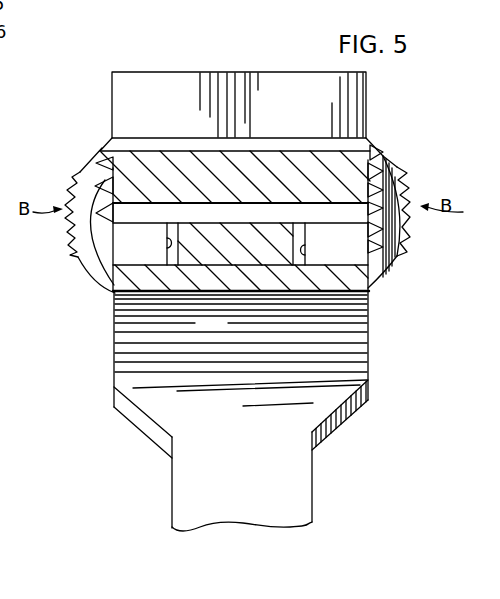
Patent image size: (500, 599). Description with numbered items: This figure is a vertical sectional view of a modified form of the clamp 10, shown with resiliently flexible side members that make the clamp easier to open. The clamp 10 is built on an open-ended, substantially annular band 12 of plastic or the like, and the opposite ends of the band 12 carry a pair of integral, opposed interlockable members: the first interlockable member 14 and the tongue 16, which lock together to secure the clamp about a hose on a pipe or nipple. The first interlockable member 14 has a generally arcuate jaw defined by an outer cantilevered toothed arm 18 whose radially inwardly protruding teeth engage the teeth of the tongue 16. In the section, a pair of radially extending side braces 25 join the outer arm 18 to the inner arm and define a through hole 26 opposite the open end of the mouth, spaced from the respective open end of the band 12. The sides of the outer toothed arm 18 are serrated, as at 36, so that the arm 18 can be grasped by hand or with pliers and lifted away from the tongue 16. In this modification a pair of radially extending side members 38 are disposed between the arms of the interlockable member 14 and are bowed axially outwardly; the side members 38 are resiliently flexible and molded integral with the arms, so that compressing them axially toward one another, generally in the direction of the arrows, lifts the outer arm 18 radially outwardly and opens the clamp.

The clamp 10 is at (19, 77).
The band 12 is at (292, 492).
The first interlockable member 14 is at (232, 63).
The tongue 16 is at (243, 251).
The outer cantilevered toothed arm 18 is at (330, 163).
The side braces 25 is at (130, 238).
The through hole 26 is at (170, 246).
The serrations 36 is at (98, 165).
The side members 38 is at (76, 218).